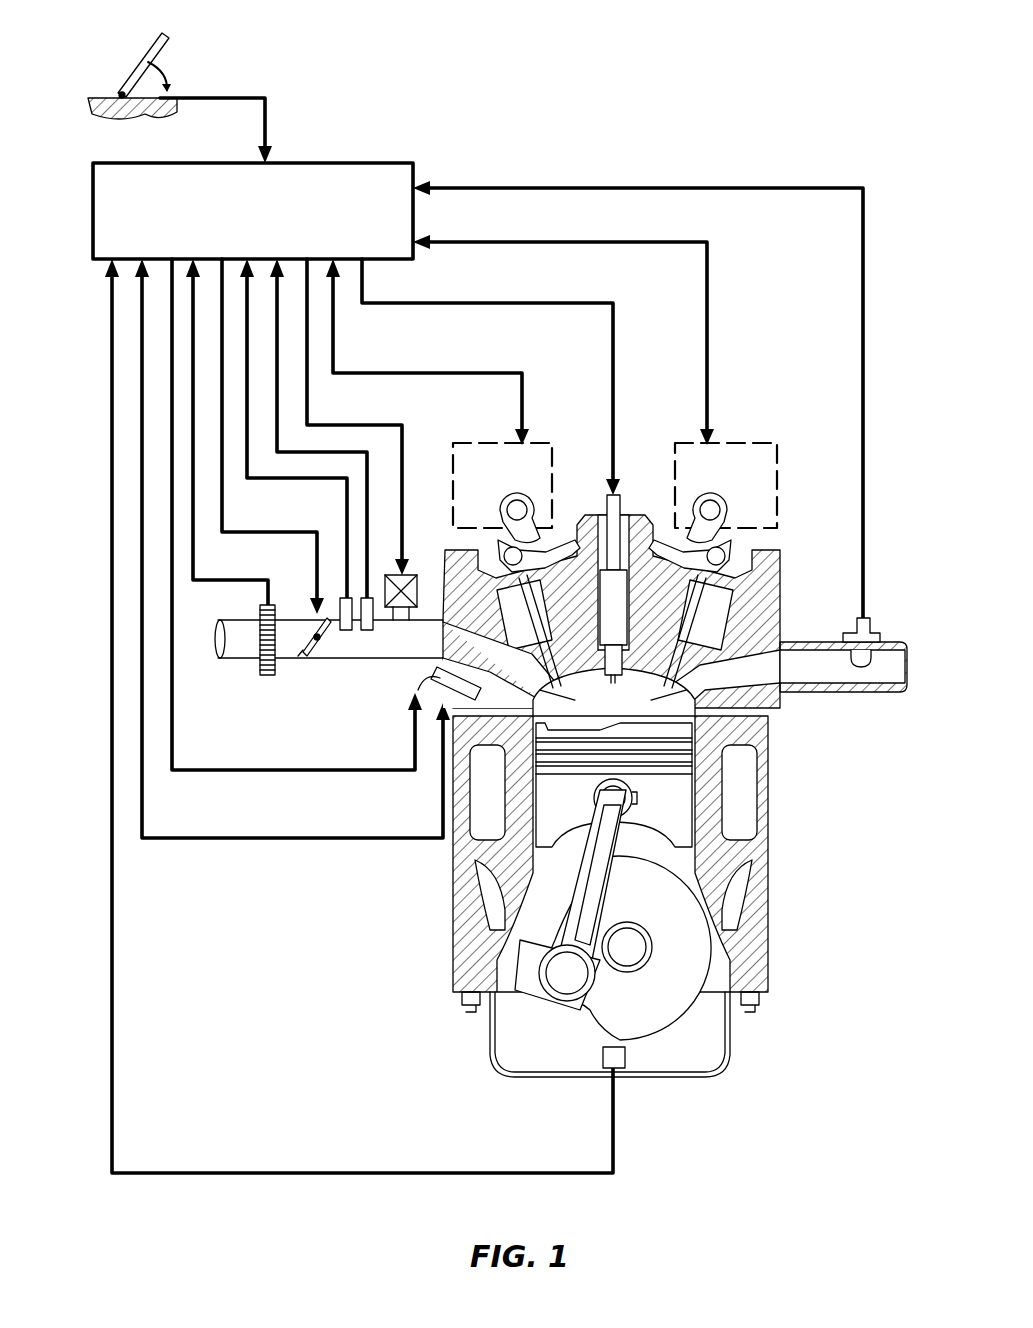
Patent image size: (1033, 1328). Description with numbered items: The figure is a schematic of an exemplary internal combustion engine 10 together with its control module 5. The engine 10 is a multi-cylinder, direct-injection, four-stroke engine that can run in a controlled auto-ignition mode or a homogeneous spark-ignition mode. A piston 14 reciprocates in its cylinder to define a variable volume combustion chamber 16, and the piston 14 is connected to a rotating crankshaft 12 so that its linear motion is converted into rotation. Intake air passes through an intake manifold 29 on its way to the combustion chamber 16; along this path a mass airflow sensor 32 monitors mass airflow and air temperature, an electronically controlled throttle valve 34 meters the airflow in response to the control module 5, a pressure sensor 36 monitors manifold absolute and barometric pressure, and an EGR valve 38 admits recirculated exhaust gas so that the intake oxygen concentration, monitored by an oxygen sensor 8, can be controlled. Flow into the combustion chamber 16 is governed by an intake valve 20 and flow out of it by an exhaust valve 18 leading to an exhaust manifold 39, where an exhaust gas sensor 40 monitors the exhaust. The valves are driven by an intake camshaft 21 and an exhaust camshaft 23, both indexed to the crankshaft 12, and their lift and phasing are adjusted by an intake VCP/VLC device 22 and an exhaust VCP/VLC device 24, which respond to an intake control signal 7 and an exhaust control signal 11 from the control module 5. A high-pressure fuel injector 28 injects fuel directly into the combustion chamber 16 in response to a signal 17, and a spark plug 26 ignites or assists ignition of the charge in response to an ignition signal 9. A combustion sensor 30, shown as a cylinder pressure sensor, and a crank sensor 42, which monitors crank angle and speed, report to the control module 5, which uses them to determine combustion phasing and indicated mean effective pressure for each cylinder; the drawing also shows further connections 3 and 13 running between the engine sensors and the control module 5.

The mass air flow sensor signal line 3 is at (275, 520).
The control module 5 is at (253, 211).
The control signal (INTAKE) 7 is at (455, 355).
The oxygen sensor 8 is at (356, 645).
The signal (IGN) 9 is at (535, 288).
The internal combustion engine 10 is at (638, 765).
The control signal (EXHAUST) 11 is at (636, 226).
The crankshaft 12 is at (672, 1010).
The signal line 13 is at (228, 821).
The piston 14 is at (634, 798).
The combustion chamber 16 is at (614, 692).
The signal 17 is at (212, 749).
The exhaust valve 18 is at (690, 690).
The intake valve 20 is at (528, 662).
The intake camshaft 21 is at (520, 510).
The intake VCP/VLC device 22 is at (502, 485).
The exhaust camshaft 23 is at (713, 512).
The exhaust VCP/VLC device 24 is at (726, 485).
The spark plug 26 is at (615, 495).
The fuel injector 28 is at (412, 700).
The intake manifold 29 is at (412, 638).
The combustion sensor 30 is at (440, 740).
The mass airflow sensor 32 is at (266, 672).
The throttle valve 34 is at (312, 648).
The pressure sensor 36 is at (345, 632).
The EGR valve 38 is at (367, 632).
The exhaust manifold 39 is at (800, 642).
The exhaust gas sensor 40 is at (872, 632).
The crank sensor 42 is at (606, 1058).